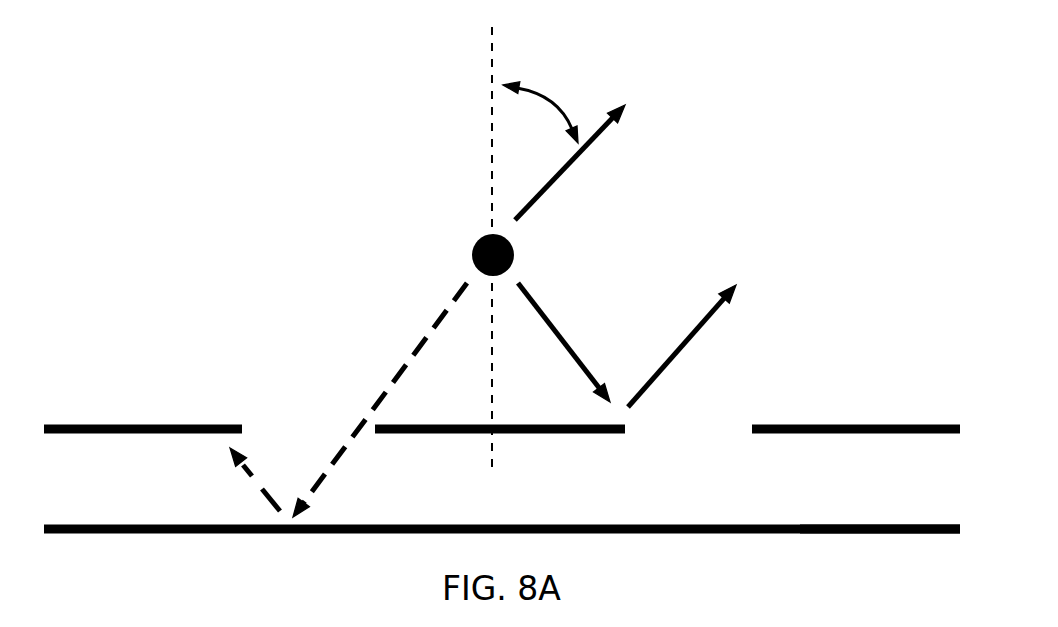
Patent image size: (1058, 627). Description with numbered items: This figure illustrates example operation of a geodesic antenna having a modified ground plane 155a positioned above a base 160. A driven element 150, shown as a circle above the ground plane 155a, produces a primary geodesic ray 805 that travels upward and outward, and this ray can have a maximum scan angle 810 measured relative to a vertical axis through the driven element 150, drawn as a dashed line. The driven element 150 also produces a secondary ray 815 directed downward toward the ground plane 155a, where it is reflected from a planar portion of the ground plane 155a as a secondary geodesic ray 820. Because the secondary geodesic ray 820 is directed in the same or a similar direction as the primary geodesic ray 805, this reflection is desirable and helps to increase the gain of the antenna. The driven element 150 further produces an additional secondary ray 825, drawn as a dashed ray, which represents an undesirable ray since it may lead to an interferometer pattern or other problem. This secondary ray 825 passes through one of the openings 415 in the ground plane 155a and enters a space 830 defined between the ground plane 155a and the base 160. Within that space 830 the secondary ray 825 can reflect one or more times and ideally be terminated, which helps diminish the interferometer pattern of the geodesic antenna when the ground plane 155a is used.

The driven element 150 is at (465, 254).
The ground plane 155a is at (133, 420).
The base 160 is at (152, 543).
The openings 415 is at (308, 420).
The primary geodesic ray 805 is at (574, 177).
The maximum scan angle 810 is at (557, 93).
The secondary ray 815 is at (569, 327).
The secondary geodesic ray 820 is at (702, 342).
The additional secondary ray 825 is at (400, 353).
The space 830 is at (853, 504).